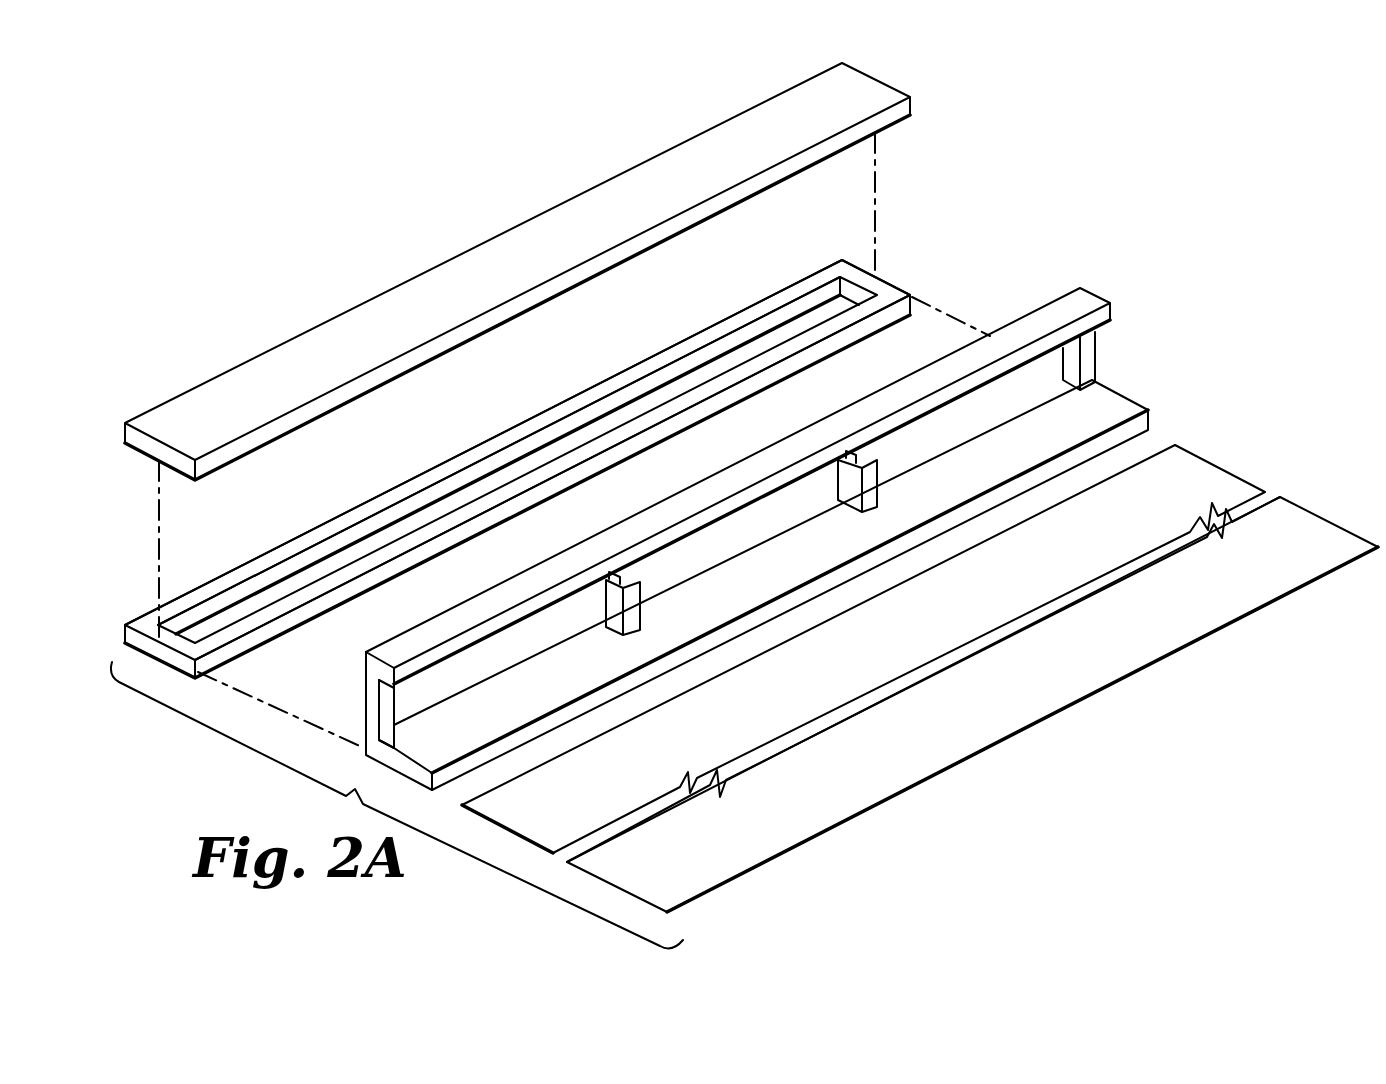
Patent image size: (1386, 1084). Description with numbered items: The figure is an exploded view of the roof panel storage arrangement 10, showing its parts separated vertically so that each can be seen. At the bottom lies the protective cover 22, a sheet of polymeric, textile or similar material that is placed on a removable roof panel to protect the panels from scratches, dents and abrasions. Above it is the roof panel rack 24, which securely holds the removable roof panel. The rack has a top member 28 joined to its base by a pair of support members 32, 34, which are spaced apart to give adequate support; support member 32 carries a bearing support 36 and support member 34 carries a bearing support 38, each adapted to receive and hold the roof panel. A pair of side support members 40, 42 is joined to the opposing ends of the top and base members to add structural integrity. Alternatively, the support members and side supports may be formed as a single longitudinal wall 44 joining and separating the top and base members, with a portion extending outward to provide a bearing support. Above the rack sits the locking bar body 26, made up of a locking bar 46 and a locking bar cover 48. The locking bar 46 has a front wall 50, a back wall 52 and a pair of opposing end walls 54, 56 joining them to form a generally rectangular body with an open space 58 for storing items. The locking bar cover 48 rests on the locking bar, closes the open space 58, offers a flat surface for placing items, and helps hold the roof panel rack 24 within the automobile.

The fixture assembly 10 is at (1196, 146).
The protective cover 22 is at (1081, 563).
The roof panel rack 24 is at (1142, 325).
The locking bar body 26 is at (937, 181).
The top member 28 is at (752, 468).
The support member 32 is at (608, 606).
The support member 34 is at (848, 483).
The bearing support 36 is at (636, 577).
The bearing support 38 is at (880, 454).
The side support member 40 is at (398, 703).
The side support member 42 is at (1097, 344).
The longitudinal wall 44 is at (353, 710).
The locking bar 46 is at (553, 402).
The locking bar cover 48 is at (583, 196).
The front wall 50 is at (390, 488).
The back wall 52 is at (500, 525).
The end wall 54 is at (893, 287).
The end wall 56 is at (172, 668).
The open space 58 is at (768, 341).